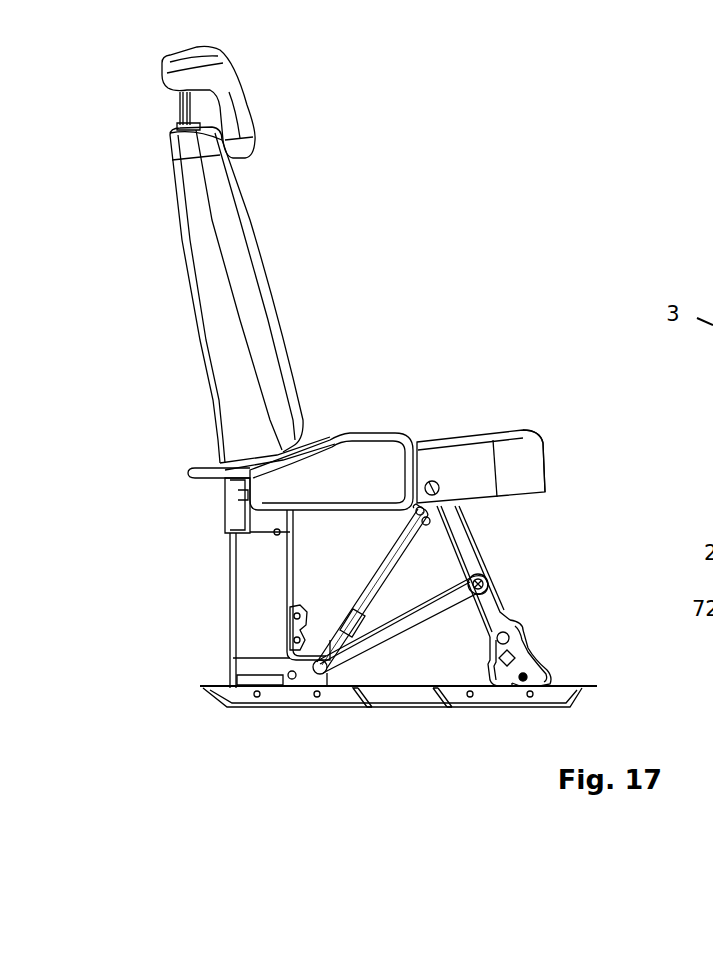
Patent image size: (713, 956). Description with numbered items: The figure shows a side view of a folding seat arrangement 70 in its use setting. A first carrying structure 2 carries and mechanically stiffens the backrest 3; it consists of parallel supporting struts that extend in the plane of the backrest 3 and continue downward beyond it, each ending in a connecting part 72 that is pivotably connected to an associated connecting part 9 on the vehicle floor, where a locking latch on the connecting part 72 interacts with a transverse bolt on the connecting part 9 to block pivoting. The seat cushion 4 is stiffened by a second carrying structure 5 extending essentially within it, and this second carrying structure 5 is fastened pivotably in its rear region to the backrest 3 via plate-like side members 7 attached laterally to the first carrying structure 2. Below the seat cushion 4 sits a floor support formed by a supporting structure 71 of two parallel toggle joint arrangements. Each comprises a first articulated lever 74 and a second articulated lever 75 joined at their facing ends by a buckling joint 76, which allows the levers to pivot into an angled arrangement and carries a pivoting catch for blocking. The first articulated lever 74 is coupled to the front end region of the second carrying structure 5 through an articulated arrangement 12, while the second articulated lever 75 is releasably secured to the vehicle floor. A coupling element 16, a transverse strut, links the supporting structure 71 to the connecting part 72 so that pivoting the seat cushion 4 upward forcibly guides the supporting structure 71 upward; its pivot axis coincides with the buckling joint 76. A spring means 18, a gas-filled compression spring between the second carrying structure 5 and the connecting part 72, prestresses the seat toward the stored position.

The folding seat arrangement 70 is at (403, 128).
The backrest 3 is at (232, 378).
The side members 7 is at (390, 477).
The seat cushion 4 is at (486, 452).
The second carrying structure 5 is at (536, 480).
The articulated arrangement 12 is at (431, 480).
The first carrying structure 2 is at (242, 590).
The connecting part 72 is at (248, 663).
The connecting part on the vehicle floor 9 is at (273, 693).
The coupling element 16 is at (378, 640).
The spring means 18 is at (401, 540).
The buckling joint 76 is at (498, 573).
The first articulated lever 74 is at (455, 536).
The supporting structure 71 is at (497, 617).
The second articulated lever 75 is at (527, 663).